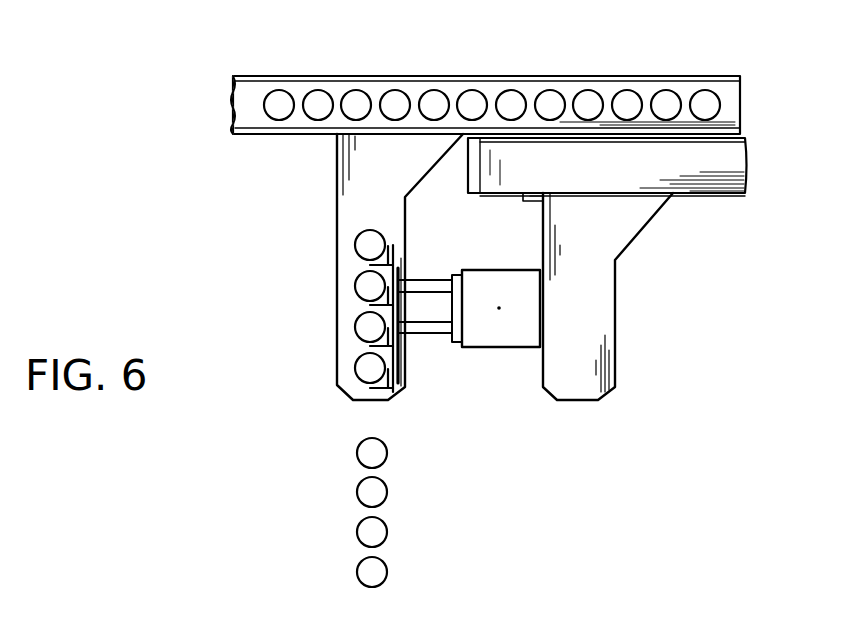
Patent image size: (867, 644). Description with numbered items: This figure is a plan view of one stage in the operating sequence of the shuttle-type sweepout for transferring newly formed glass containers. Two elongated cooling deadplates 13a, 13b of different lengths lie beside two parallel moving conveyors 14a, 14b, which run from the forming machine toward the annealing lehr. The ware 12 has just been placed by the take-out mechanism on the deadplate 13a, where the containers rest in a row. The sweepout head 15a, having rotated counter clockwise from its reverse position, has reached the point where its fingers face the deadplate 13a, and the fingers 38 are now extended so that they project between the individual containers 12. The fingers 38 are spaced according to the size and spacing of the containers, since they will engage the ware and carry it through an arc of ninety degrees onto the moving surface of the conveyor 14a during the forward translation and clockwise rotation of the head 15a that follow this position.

The ware 12 is at (275, 98).
The cooling deadplate 13a is at (347, 363).
The cooling deadplate 13b is at (598, 370).
The conveyor 14a is at (730, 107).
The conveyor 14b is at (718, 165).
The sweepout head 15a is at (500, 364).
The fingers 38 is at (402, 257).